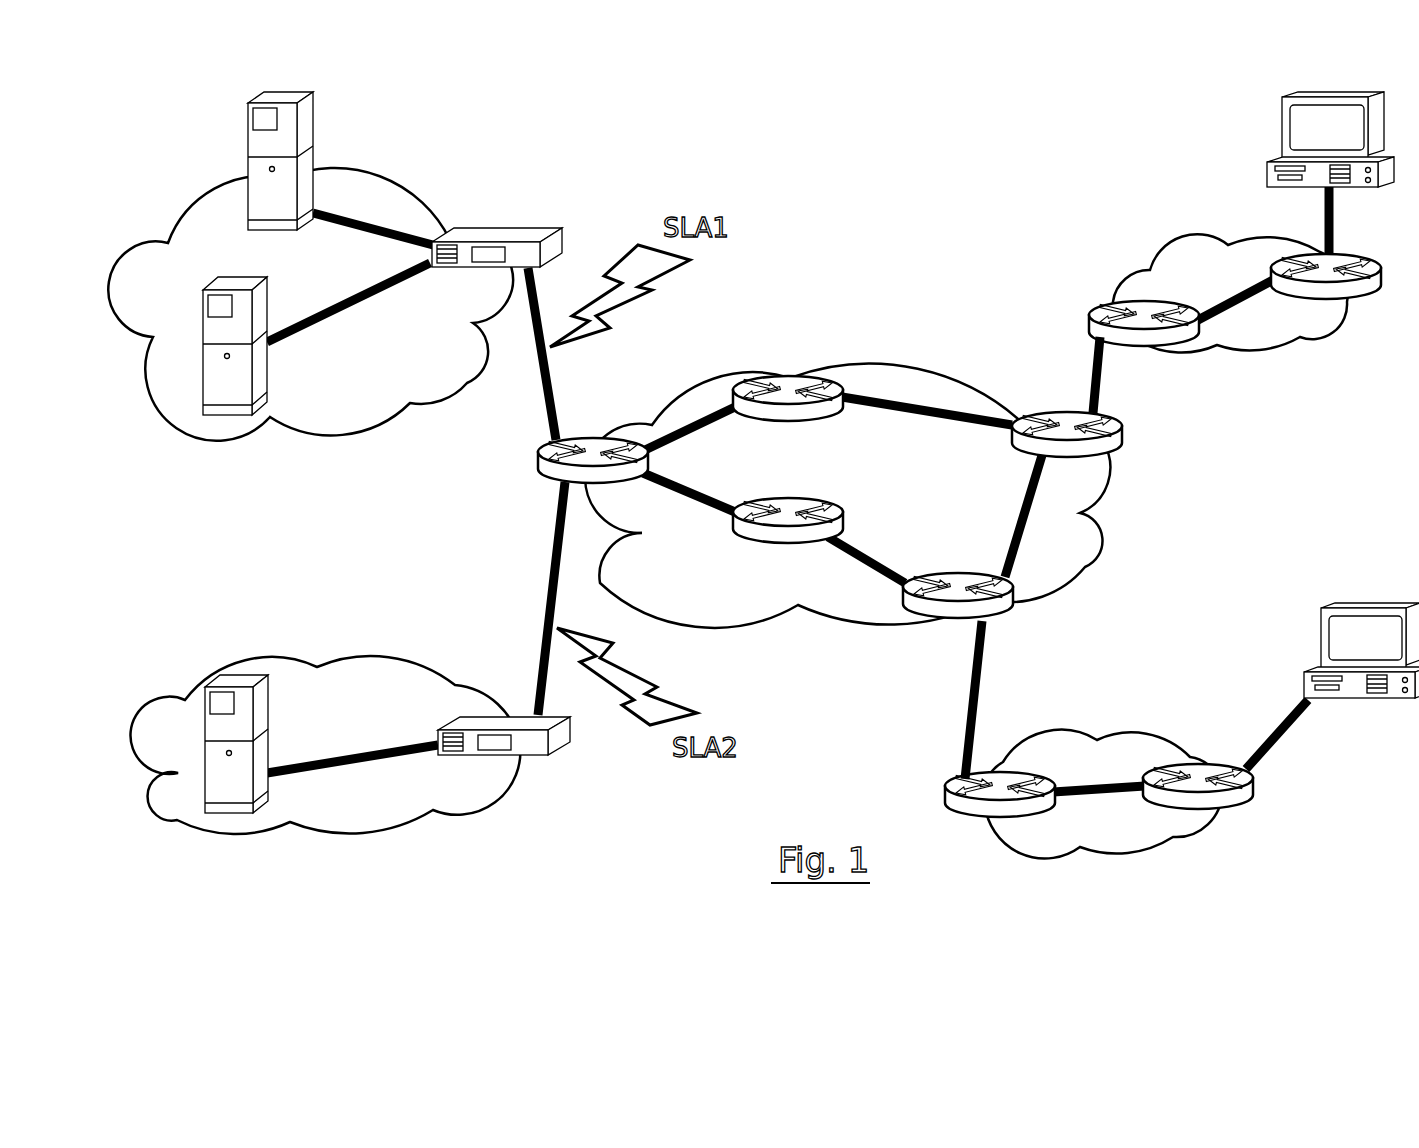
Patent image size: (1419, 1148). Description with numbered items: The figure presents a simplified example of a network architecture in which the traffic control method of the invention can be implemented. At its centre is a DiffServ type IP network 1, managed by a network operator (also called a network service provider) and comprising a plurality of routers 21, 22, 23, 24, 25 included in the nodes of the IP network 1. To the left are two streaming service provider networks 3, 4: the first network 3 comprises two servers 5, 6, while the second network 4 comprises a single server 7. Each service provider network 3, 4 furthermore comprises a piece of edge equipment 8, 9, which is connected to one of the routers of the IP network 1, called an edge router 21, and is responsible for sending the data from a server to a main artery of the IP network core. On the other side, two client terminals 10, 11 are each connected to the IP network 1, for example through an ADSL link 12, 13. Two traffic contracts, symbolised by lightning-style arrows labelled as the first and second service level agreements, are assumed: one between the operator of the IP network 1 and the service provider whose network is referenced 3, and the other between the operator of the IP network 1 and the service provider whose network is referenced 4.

The DiffServ type IP network 1 is at (968, 372).
The streaming service provider network 3 is at (405, 178).
The streaming service provider network 4 is at (392, 655).
The server 5 is at (307, 131).
The server 6 is at (223, 397).
The server 7 is at (238, 678).
The edge equipment 8 is at (528, 226).
The edge equipment 9 is at (540, 762).
The client terminal 10 is at (1282, 131).
The client terminal 11 is at (1365, 602).
The ADSL link 12 is at (1225, 295).
The ADSL link 13 is at (1122, 740).
The edge router 21 is at (540, 461).
The router 22 is at (790, 376).
The router 23 is at (780, 545).
The router 24 is at (1000, 617).
The router 25 is at (1117, 436).